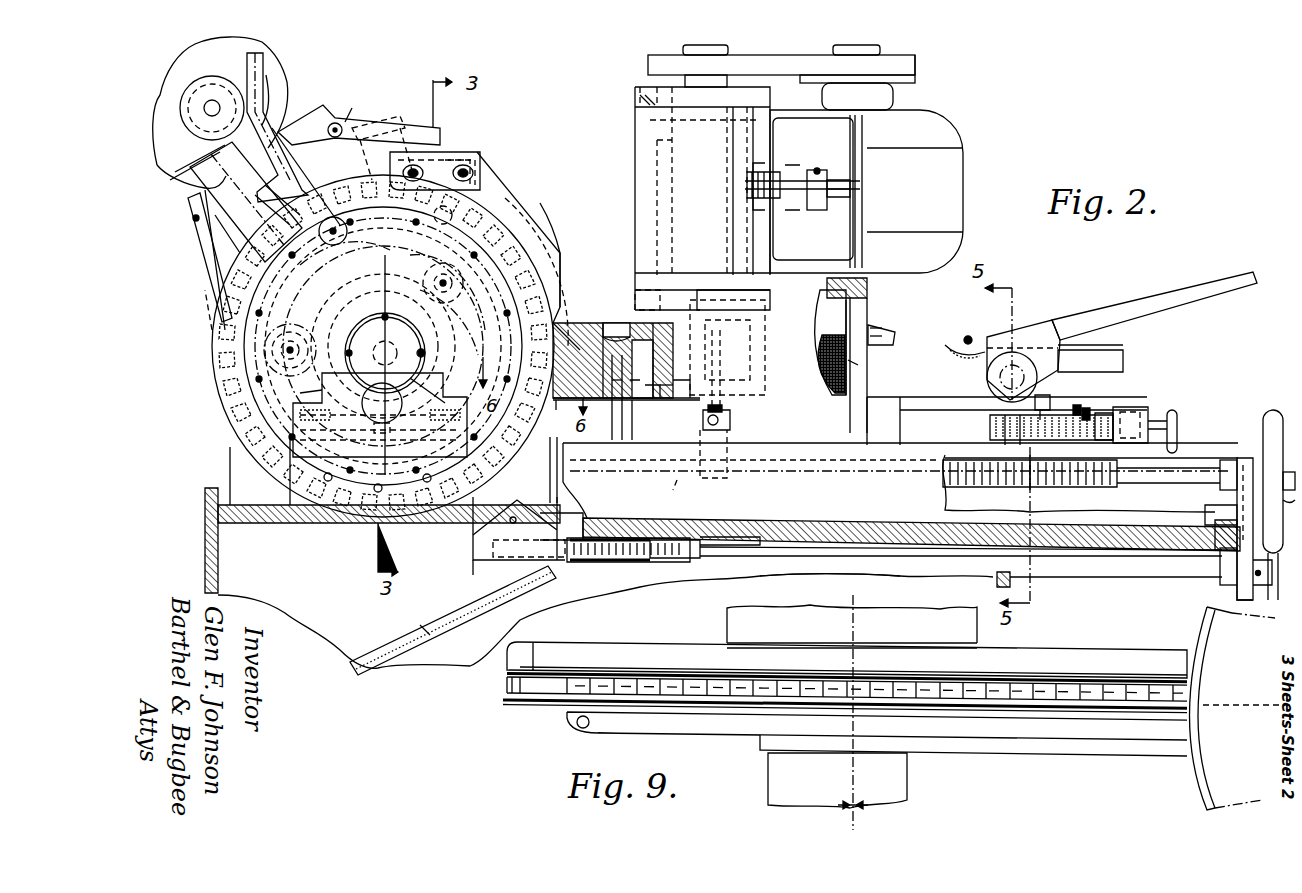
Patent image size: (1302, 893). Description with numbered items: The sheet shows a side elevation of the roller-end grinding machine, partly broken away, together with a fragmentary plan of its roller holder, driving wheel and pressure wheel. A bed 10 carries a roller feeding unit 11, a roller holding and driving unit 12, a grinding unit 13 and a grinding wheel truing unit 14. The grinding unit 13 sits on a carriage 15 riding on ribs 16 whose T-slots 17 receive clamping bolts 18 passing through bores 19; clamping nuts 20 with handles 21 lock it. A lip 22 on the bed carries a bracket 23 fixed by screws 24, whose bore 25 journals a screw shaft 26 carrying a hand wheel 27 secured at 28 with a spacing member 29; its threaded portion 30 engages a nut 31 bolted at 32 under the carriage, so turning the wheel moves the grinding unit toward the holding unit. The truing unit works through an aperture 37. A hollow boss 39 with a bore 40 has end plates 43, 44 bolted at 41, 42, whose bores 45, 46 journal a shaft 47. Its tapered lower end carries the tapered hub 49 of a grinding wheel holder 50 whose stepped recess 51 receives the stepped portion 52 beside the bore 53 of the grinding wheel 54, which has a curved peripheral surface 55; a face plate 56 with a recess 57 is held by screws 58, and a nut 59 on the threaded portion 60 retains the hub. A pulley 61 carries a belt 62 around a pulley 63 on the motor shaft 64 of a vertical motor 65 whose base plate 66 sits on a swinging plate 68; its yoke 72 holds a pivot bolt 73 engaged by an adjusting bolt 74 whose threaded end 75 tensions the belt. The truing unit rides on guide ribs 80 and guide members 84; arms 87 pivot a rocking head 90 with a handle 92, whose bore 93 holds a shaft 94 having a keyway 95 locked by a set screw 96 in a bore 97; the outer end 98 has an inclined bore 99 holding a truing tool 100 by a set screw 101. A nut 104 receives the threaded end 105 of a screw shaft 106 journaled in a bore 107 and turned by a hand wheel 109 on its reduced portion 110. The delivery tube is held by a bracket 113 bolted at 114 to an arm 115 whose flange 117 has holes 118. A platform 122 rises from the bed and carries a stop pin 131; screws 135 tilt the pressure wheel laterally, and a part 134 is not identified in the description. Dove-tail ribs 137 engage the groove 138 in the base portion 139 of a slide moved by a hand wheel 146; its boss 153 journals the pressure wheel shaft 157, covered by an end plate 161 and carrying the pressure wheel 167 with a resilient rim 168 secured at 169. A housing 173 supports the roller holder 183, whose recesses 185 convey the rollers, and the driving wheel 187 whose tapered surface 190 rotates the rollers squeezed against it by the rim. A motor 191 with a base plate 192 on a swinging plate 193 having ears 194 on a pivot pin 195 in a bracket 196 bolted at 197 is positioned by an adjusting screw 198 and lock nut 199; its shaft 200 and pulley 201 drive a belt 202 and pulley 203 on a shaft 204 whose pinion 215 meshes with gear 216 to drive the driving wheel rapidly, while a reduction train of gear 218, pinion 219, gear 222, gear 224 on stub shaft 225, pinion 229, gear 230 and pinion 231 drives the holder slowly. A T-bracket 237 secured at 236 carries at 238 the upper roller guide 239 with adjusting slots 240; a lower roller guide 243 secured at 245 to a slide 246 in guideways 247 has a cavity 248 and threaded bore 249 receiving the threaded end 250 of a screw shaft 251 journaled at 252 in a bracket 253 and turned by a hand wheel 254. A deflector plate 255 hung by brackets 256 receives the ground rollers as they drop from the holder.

In FIG. 2, the bed 10 is at (292, 526).
In FIG. 2, the roller feeding unit 11 is at (272, 60).
In FIG. 2, the roller holding and driving unit 12 is at (208, 368).
In FIG. 2, the grinding unit 13 is at (632, 223).
In FIG. 2, the grinding wheel truing unit 14 is at (1040, 320).
In FIG. 2, the carriage 15 is at (888, 462).
In FIG. 2, the ribs 16 is at (900, 480).
In FIG. 2, the longitudinal T-slots 17 is at (677, 478).
In FIG. 2, the clamping bolts 18 is at (715, 408).
In FIG. 2, the bores 19 is at (1075, 405).
In FIG. 2, the clamping nuts 20 is at (1085, 408).
In FIG. 2, the handles 21 is at (730, 418).
In FIG. 2, the peripheral lip 22 is at (216, 492).
In FIG. 2, the upstanding bracket 23 is at (1240, 458).
In FIG. 2, the screws 24 is at (1221, 525).
In FIG. 2, the bore 25 is at (1248, 470).
In FIG. 2, the screw shaft 26 is at (1220, 460).
In FIG. 2, the hand wheel 27 is at (1272, 412).
In FIG. 2, the hand wheel fastening 28 is at (1288, 470).
In FIG. 2, the spacing member 29 is at (1280, 500).
In FIG. 2, the threaded portion 30 is at (1080, 487).
In FIG. 2, the nut 31 is at (1012, 488).
In FIG. 2, the bolt fastening 32 is at (1065, 490).
In FIG. 2, the aperture 37 is at (870, 320).
In FIG. 2, the hollow cylindrical boss 39 is at (635, 188).
In FIG. 2, the internal bore 40 is at (657, 158).
In FIG. 2, the upper end plate bolts 41 is at (640, 90).
In FIG. 2, the lower end plate bolts 42 is at (640, 297).
In FIG. 2, the upper end plate 43 is at (722, 182).
In FIG. 2, the lower end plate 44 is at (722, 300).
In FIG. 2, the central bore 45 is at (672, 90).
In FIG. 2, the central bore 46 is at (650, 305).
In FIG. 2, the shaft 47 is at (657, 142).
In FIG. 2, the internally tapered hub 49 is at (732, 325).
In FIG. 2, the grinding wheel holder 50 is at (618, 322).
In FIG. 2, the stepped annular recess 51 is at (600, 330).
In FIG. 2, the stepped portion 52 is at (590, 330).
In FIG. 2, the bore 53 is at (605, 398).
In FIG. 2, the grinding wheel 54 is at (833, 318).
In FIG. 9, the grinding wheel 54 is at (1195, 648).
In FIG. 2, the curved peripheral surface 55 is at (565, 323).
In FIG. 9, the curved peripheral surface 55 is at (1202, 630).
In FIG. 2, the annular face plate 56 is at (634, 398).
In FIG. 2, the stepped annular recess 57 is at (618, 398).
In FIG. 2, the screws 58 is at (651, 398).
In FIG. 2, the nut 59 is at (665, 398).
In FIG. 2, the reduced diameter threaded portion 60 is at (680, 398).
In FIG. 2, the pulley 61 is at (660, 52).
In FIG. 2, the endless belt 62 is at (780, 65).
In FIG. 2, the pulley 63 is at (915, 58).
In FIG. 2, the motor shaft 64 is at (900, 82).
In FIG. 2, the vertical motor 65 is at (950, 178).
In FIG. 2, the base plate 66 is at (858, 177).
In FIG. 2, the swinging plate 68 is at (858, 191).
In FIG. 2, the yoke portion 72 is at (830, 208).
In FIG. 2, the pivot bolt 73 is at (823, 166).
In FIG. 2, the adjusting bolt 74 is at (808, 180).
In FIG. 2, the outer threaded end 75 is at (745, 190).
In FIG. 2, the guide ribs 80 is at (913, 409).
In FIG. 2, the bevelled elongated guide members 84 is at (1007, 391).
In FIG. 2, the upstanding arms 87 is at (1050, 392).
In FIG. 2, the rocking head 90 is at (1010, 335).
In FIG. 2, the handle 92 is at (1140, 310).
In FIG. 2, the longitudinal bore 93 is at (1062, 342).
In FIG. 2, the shaft 94 is at (1123, 360).
In FIG. 2, the longitudinal keyway 95 is at (958, 344).
In FIG. 2, the set screw 96 is at (868, 312).
In FIG. 2, the bore 97 is at (958, 340).
In FIG. 2, the outer end 98 is at (850, 275).
In FIG. 2, the inclined bore 99 is at (858, 365).
In FIG. 2, the truing tool 100 is at (870, 328).
In FIG. 2, the set screw 101 is at (870, 336).
In FIG. 2, the nut 104 is at (1020, 440).
In FIG. 2, the threaded end 105 is at (990, 425).
In FIG. 2, the screw shaft 106 is at (1110, 410).
In FIG. 2, the bore 107 is at (1148, 408).
In FIG. 2, the hand wheel 109 is at (1177, 415).
In FIG. 2, the reduced diameter portion 110 is at (1178, 427).
In FIG. 2, the bracket 113 is at (298, 175).
In FIG. 2, the bolts 114 is at (267, 199).
In FIG. 2, the arm 115 is at (210, 150).
In FIG. 2, the flange 117 is at (205, 142).
In FIG. 2, the spaced holes 118 is at (246, 202).
In FIG. 2, the platform 122 is at (232, 466).
In FIG. 2, the stop pin 131 is at (396, 470).
In FIG. 2, the pin 134 is at (386, 465).
In FIG. 2, the screws 135 is at (380, 418).
In FIG. 2, the dove-tail ribs 137 is at (448, 385).
In FIG. 2, the dove-tail groove 138 is at (374, 432).
In FIG. 2, the base portion 139 is at (442, 390).
In FIG. 2, the hand wheel 146 is at (382, 408).
In FIG. 2, the boss 153 is at (422, 351).
In FIG. 9, the boss 153 is at (907, 795).
In FIG. 2, the pressure wheel shaft 157 is at (446, 343).
In FIG. 2, the end plate 161 is at (385, 365).
In FIG. 9, the pressure wheel 167 is at (634, 730).
In FIG. 2, the resilient spring rim 168 is at (570, 258).
In FIG. 9, the resilient spring rim 168 is at (538, 700).
In FIG. 2, the rim fastening 169 is at (240, 412).
In FIG. 9, the rim fastening 169 is at (585, 734).
In FIG. 2, the housing 173 is at (455, 145).
In FIG. 9, the housing 173 is at (977, 637).
In FIG. 9, the roller holder 183 is at (588, 680).
In FIG. 2, the spaced recesses 185 is at (566, 268).
In FIG. 9, the spaced recesses 185 is at (612, 690).
In FIG. 9, the driving wheel 187 is at (640, 650).
In FIG. 9, the lateral tapered surface 190 is at (512, 675).
In FIG. 2, the motor 191 is at (278, 90).
In FIG. 2, the base plate 192 is at (312, 115).
In FIG. 2, the swinging plate 193 is at (205, 262).
In FIG. 2, the ears 194 is at (353, 104).
In FIG. 2, the pivot pin 195 is at (338, 124).
In FIG. 2, the bracket 196 is at (395, 124).
In FIG. 2, the bolts 197 is at (380, 110).
In FIG. 2, the adjusting screw 198 is at (192, 216).
In FIG. 2, the lock nut 199 is at (195, 228).
In FIG. 2, the shaft 200 is at (214, 96).
In FIG. 2, the pulley 201 is at (185, 100).
In FIG. 2, the endless belt 202 is at (210, 275).
In FIG. 2, the pulley 203 is at (212, 318).
In FIG. 2, the shaft 204 is at (304, 396).
In FIG. 2, the pinion 215 is at (306, 335).
In FIG. 2, the gear 216 is at (383, 346).
In FIG. 2, the gear 218 is at (300, 232).
In FIG. 2, the pinion 219 is at (291, 338).
In FIG. 2, the gear 222 is at (383, 345).
In FIG. 2, the gear 224 is at (518, 237).
In FIG. 2, the stub shaft 225 is at (345, 253).
In FIG. 2, the pinion 229 is at (385, 312).
In FIG. 2, the gear 230 is at (462, 316).
In FIG. 2, the pinion 231 is at (455, 290).
In FIG. 2, the bracket fastening 236 is at (458, 221).
In FIG. 2, the T-bracket 237 is at (435, 166).
In FIG. 2, the guide fastening 238 is at (470, 170).
In FIG. 2, the upper roller guide 239 is at (545, 250).
In FIG. 2, the slots 240 is at (480, 175).
In FIG. 2, the lower roller guide 243 is at (519, 504).
In FIG. 2, the guide fastening 245 is at (515, 513).
In FIG. 2, the slide 246 is at (540, 530).
In FIG. 2, the guideways 247 is at (462, 560).
In FIG. 2, the hollow cavity 248 is at (628, 559).
In FIG. 2, the threaded bore 249 is at (612, 565).
In FIG. 2, the threaded end 250 is at (700, 562).
In FIG. 2, the screw shaft 251 is at (824, 568).
In FIG. 2, the journal 252 is at (1222, 588).
In FIG. 2, the bracket 253 is at (1236, 588).
In FIG. 2, the hand wheel 254 is at (1268, 605).
In FIG. 2, the deflector plate 255 is at (380, 652).
In FIG. 2, the brackets 256 is at (300, 582).